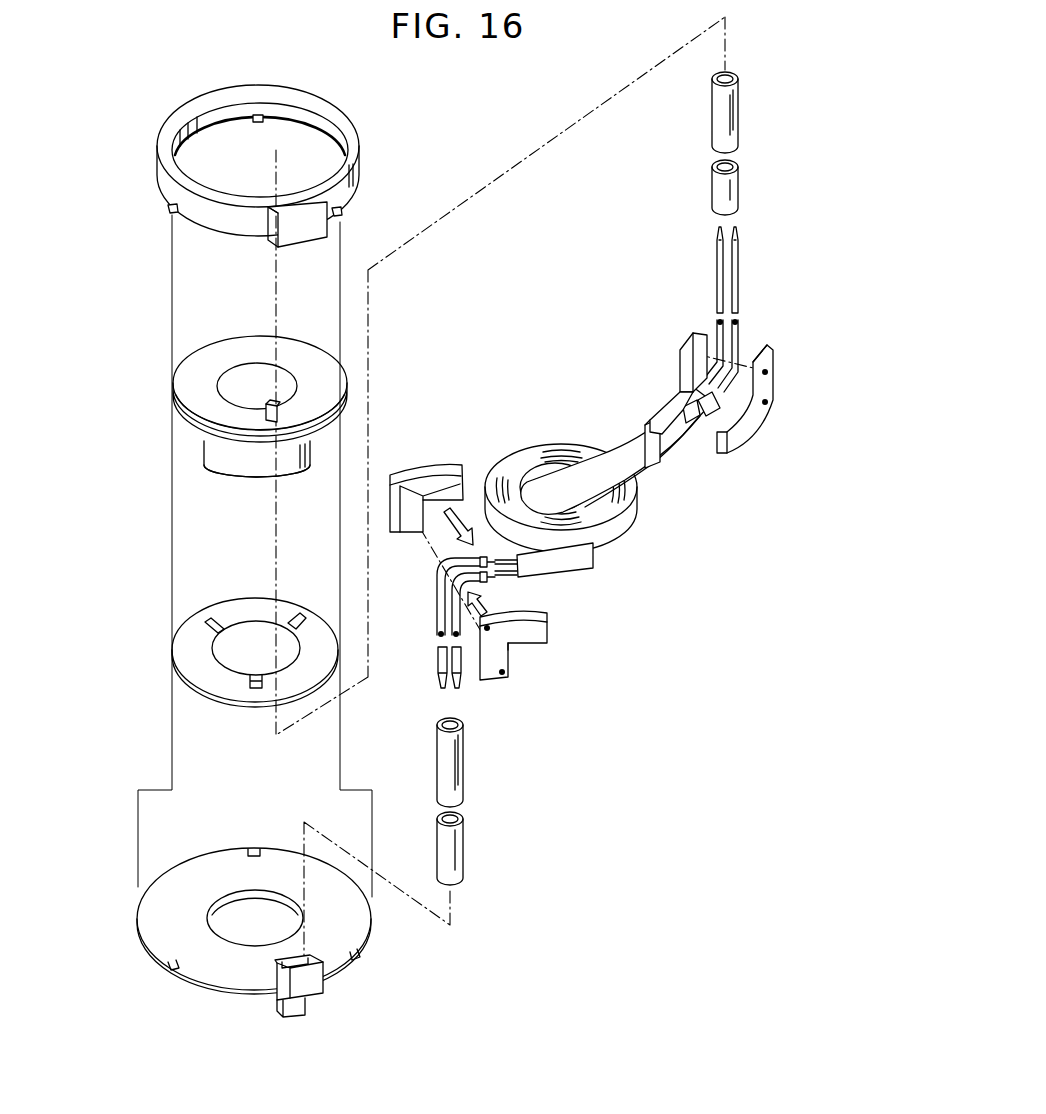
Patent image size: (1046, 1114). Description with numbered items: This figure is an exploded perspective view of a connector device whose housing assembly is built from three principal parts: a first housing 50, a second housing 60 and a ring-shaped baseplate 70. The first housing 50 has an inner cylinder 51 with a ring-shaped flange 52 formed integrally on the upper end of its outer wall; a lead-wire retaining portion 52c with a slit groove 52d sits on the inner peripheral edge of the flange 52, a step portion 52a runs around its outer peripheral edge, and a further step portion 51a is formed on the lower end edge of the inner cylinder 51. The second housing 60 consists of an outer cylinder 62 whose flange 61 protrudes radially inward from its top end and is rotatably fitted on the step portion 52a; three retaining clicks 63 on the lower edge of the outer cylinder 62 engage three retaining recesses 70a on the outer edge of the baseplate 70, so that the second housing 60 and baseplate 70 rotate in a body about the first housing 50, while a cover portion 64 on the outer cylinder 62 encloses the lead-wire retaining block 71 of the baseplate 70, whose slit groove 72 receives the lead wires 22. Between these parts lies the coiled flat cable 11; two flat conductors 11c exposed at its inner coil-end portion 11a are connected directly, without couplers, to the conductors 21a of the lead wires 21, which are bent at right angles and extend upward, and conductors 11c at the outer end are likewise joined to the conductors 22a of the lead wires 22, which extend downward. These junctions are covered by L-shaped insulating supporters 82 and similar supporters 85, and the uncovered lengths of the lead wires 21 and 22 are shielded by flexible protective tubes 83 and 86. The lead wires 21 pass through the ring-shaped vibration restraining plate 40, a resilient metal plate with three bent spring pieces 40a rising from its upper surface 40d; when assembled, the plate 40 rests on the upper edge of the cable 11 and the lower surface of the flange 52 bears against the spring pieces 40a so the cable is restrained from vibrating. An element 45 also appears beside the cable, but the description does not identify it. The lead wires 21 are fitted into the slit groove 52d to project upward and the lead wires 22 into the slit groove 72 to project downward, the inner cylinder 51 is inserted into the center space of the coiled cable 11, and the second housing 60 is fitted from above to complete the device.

The second housing 60 is at (342, 109).
The flange 61 is at (352, 156).
The outer cylinder 62 is at (354, 192).
The retaining clicks 63 is at (258, 124).
The cover portion 64 is at (288, 246).
The first housing 50 is at (350, 374).
The inner cylinder 51 is at (222, 462).
The step portion 51a is at (232, 474).
The flange 52 is at (190, 367).
The step portion 52a is at (176, 406).
The lead-wire retaining portion 52c is at (281, 412).
The slit groove 52d is at (275, 392).
The vibration restraining plate 40 is at (192, 670).
The spring pieces 40a is at (204, 624).
The upper surface 40d is at (240, 610).
The baseplate 70 is at (217, 980).
The retaining recesses 70a is at (255, 848).
The lead-wire retaining block 71 is at (322, 985).
The slit groove 72 is at (300, 970).
The flat cable 11 is at (553, 447).
The inner coil-end portion 11a is at (672, 445).
The flat conductors 11c is at (520, 571).
The clamp 45 is at (653, 468).
The lead wires 21 is at (737, 280).
The conductors 21a is at (716, 400).
The lead wires 22 is at (440, 610).
The conductors 22a is at (490, 577).
The supporters 82 is at (685, 365).
The protective tube 83 is at (739, 194).
The supporters 85 is at (396, 508).
The protective tube 86 is at (465, 853).